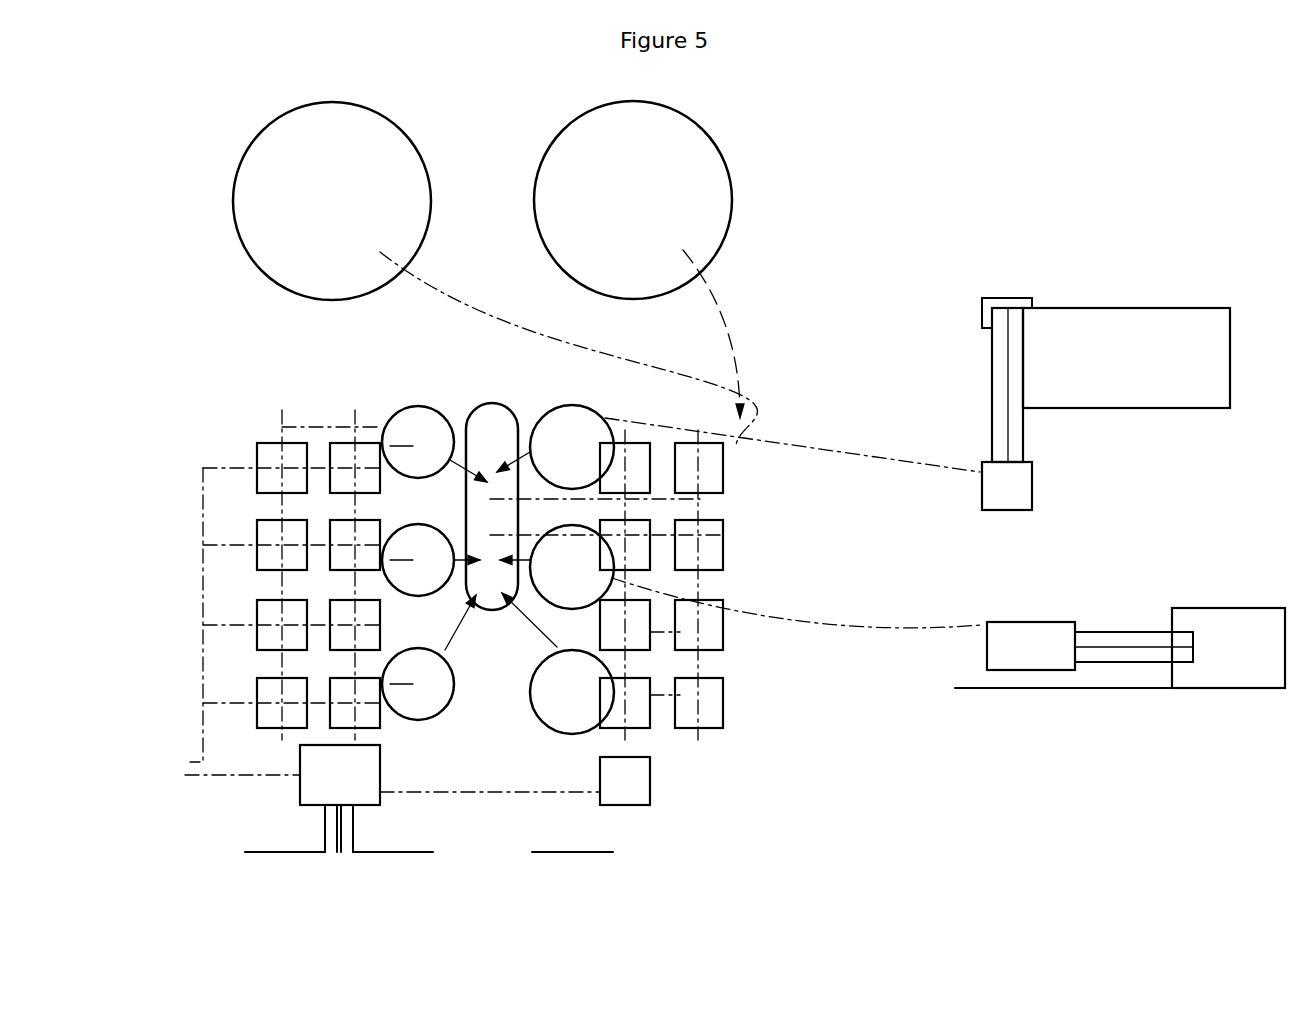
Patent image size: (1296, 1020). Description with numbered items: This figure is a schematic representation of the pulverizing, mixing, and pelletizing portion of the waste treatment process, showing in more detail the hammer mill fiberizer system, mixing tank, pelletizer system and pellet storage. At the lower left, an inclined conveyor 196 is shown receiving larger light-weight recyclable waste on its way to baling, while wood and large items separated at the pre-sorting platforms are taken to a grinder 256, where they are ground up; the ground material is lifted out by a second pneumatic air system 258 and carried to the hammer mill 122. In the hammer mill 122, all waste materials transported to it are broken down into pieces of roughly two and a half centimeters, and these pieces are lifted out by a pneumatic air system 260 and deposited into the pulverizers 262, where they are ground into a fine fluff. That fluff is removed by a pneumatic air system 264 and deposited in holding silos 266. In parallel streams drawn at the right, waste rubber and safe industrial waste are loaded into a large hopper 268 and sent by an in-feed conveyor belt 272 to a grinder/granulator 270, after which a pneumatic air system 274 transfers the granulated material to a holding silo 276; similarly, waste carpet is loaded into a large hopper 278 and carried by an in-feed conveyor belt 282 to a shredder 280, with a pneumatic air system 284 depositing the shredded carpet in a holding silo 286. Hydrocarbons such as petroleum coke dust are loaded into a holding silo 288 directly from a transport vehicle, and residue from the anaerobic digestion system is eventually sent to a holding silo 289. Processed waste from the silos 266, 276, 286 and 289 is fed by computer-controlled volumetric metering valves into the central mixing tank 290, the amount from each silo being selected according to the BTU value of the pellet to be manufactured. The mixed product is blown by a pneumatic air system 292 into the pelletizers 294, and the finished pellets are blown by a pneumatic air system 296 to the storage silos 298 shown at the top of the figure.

The hammer mill 122 is at (300, 805).
The inclined conveyor 196 is at (353, 830).
The grinder 256 is at (640, 775).
The second pneumatic air system 258 is at (497, 797).
The pneumatic air system 260 is at (200, 765).
The pulverizers 262 is at (298, 481).
The pneumatic air system 264 is at (282, 428).
The holding silos 266 is at (446, 530).
The large hopper 268 is at (1155, 408).
The grinder/granulator 270 is at (1032, 497).
The in-feed conveyor belt 272 is at (1000, 372).
The pneumatic air system 274 is at (800, 442).
The holding silo 276 is at (545, 412).
The large hopper 278 is at (1250, 688).
The shredder 280 is at (1032, 670).
The in-feed conveyor belt 282 is at (1140, 662).
The pneumatic air system 284 is at (930, 614).
The holding silo 286 is at (553, 603).
The holding silo 288 is at (547, 722).
The holding silo 289 is at (430, 406).
The mixing tank 290 is at (482, 410).
The pneumatic air system 292 is at (700, 452).
The pelletizers 294 is at (705, 478).
The pneumatic air system 296 is at (716, 293).
The storage silos 298 is at (270, 122).